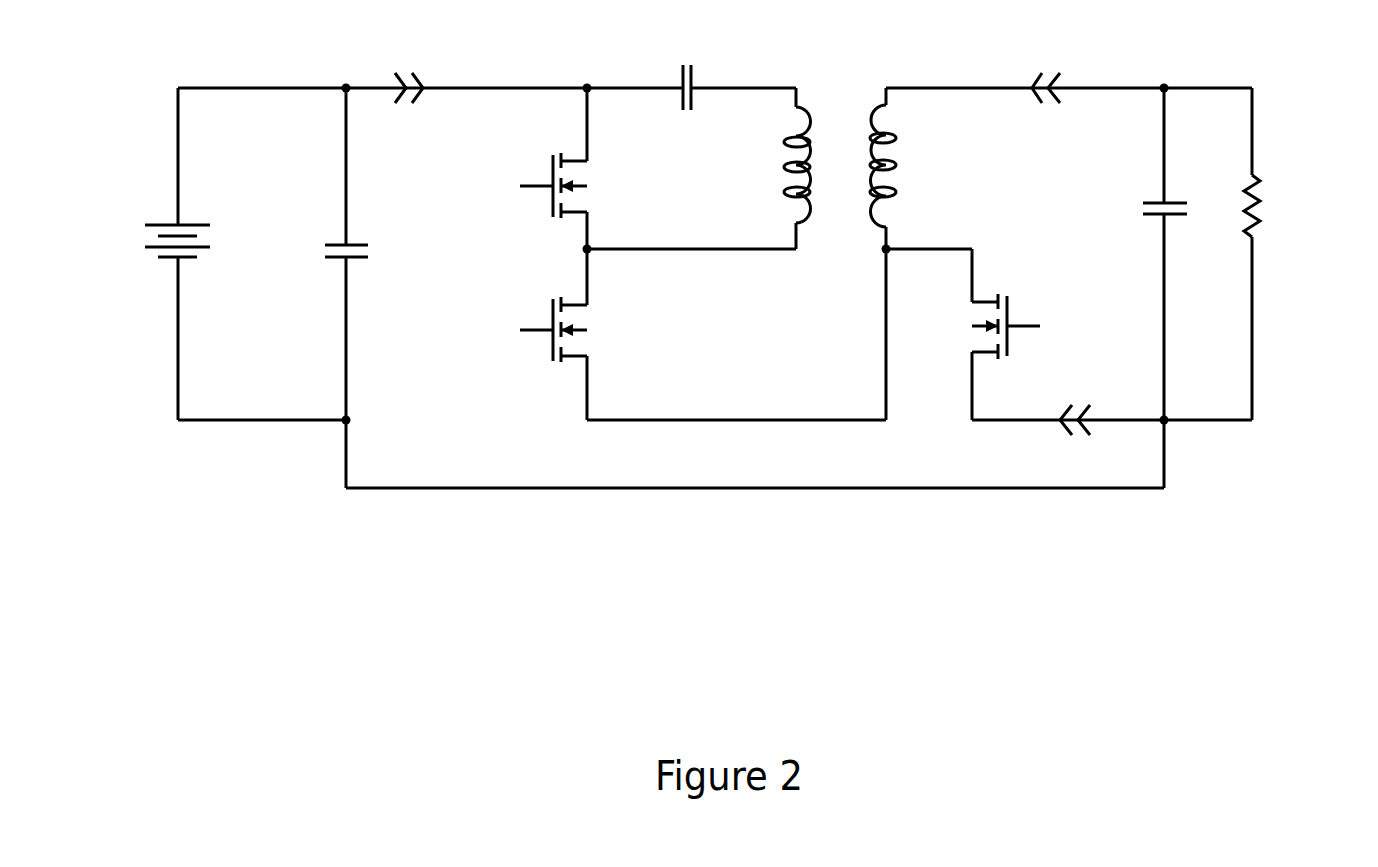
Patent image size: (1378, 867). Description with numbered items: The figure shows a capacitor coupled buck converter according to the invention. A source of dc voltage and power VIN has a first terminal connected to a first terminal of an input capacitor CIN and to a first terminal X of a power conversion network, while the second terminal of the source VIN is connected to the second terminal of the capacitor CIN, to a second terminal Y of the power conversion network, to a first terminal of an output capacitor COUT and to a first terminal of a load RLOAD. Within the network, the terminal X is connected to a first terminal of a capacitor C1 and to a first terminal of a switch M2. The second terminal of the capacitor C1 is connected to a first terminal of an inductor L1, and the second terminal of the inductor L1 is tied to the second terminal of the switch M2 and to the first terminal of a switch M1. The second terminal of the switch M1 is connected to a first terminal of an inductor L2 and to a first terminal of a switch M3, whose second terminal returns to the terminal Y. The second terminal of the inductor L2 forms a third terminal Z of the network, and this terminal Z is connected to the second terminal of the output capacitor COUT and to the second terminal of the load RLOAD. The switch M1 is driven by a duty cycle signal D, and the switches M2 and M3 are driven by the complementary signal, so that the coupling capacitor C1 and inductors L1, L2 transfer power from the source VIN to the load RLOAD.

The source of dc voltage and power VIN is at (149, 254).
The input capacitor CIN is at (320, 288).
The first terminal of the power conversion network X is at (408, 69).
The switch M2 is at (584, 168).
The switch M1 is at (585, 334).
The switch M3 is at (975, 334).
The duty cycle drive signal D is at (493, 331).
The capacitor C1 is at (683, 71).
The inductor L1 is at (774, 168).
The inductor L2 is at (907, 157).
The third terminal of the power conversion network Z is at (1046, 67).
The output capacitor COUT is at (1121, 288).
The load RLOAD is at (1300, 210).
The second terminal of the power conversion network Y is at (1075, 440).